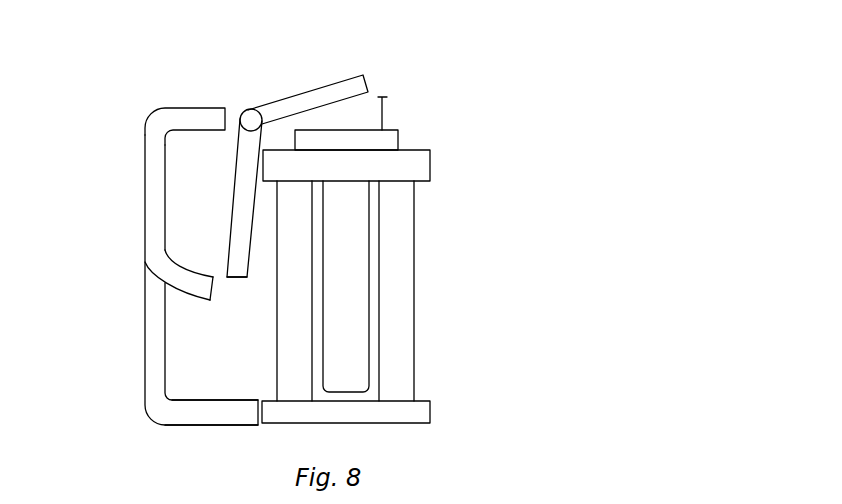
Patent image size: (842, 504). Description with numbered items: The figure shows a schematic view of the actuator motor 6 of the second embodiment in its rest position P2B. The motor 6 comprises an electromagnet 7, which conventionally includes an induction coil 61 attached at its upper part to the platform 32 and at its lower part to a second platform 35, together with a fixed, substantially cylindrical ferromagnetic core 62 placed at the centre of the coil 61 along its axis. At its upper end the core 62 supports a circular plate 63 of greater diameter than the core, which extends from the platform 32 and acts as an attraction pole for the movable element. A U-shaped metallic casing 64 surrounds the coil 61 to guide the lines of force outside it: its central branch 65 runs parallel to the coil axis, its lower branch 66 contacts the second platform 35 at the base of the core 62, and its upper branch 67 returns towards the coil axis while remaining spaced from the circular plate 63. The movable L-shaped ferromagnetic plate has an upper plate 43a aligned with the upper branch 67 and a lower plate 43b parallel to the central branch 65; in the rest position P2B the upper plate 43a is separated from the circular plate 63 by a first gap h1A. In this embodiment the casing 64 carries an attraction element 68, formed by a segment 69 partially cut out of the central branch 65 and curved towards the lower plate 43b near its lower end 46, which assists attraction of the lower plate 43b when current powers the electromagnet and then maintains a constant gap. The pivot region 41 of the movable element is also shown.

The actuator motor 6 is at (106, 119).
The electromagnet 7 is at (469, 366).
The platform 32 is at (413, 165).
The second platform 35 is at (410, 413).
The lever 41 is at (245, 110).
The upper plate 43a is at (325, 102).
The lower plate 43b is at (232, 250).
The lower end 46 is at (239, 294).
The coil 61 is at (401, 335).
The ferromagnetic core 62 is at (356, 284).
The circular plate 63 is at (392, 139).
The metallic casing 64 is at (121, 366).
The central branch 65 is at (171, 302).
The lower branch 66 is at (212, 420).
The upper branch 67 is at (202, 113).
The attraction element 68 is at (172, 308).
The segment 69 is at (196, 303).
The first gap h1A is at (408, 112).
The rest position P2B is at (410, 81).